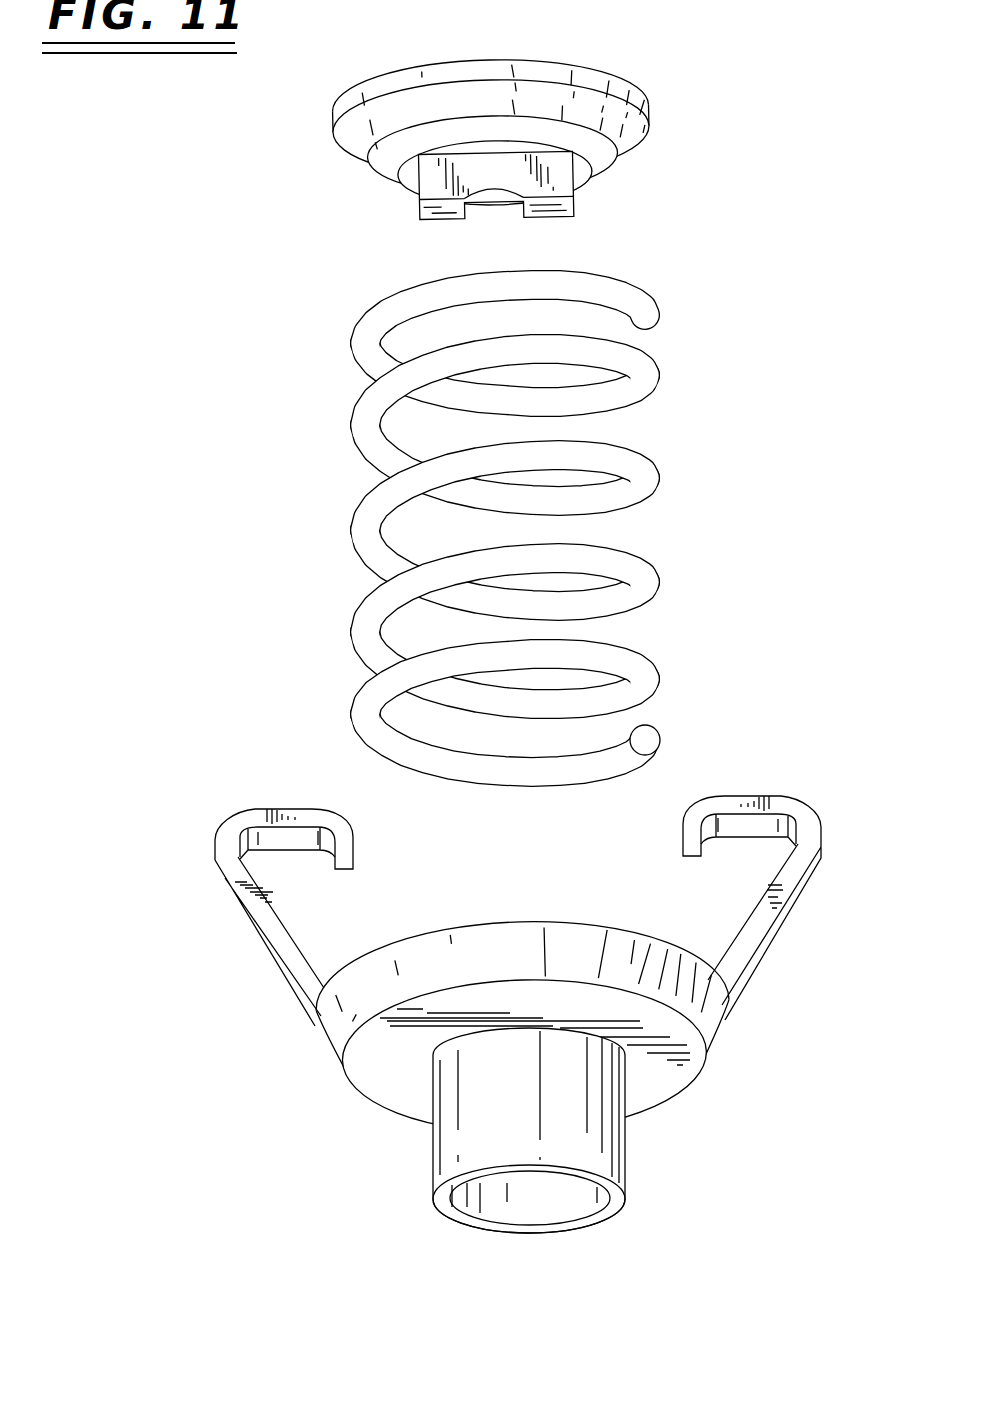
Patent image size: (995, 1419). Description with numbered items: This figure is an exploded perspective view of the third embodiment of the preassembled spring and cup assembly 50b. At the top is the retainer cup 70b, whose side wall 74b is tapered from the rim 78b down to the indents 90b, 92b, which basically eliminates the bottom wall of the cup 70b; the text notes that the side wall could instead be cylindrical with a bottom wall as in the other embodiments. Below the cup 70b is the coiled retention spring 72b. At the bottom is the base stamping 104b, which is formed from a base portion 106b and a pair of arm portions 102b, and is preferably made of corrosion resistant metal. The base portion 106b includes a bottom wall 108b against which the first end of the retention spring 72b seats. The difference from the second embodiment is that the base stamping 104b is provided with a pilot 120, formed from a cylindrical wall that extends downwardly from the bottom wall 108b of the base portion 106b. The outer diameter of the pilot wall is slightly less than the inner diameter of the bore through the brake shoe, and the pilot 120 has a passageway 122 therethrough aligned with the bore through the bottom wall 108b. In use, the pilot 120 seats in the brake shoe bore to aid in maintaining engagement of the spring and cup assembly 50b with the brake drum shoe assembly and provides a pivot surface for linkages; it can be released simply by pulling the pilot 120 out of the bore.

The spring and cup assembly 50b is at (511, 658).
The retainer cup 70b is at (511, 133).
The retention spring 72b is at (652, 382).
The side wall 74b is at (362, 141).
The rim 78b is at (600, 83).
The indent 90b is at (422, 206).
The indent 92b is at (572, 203).
The arm portion 102b is at (250, 915).
The base stamping 104b is at (511, 1044).
The base portion 106b is at (716, 1028).
The bottom wall 108b is at (393, 1078).
The pilot 120 is at (561, 1160).
The passageway 122 is at (540, 1213).